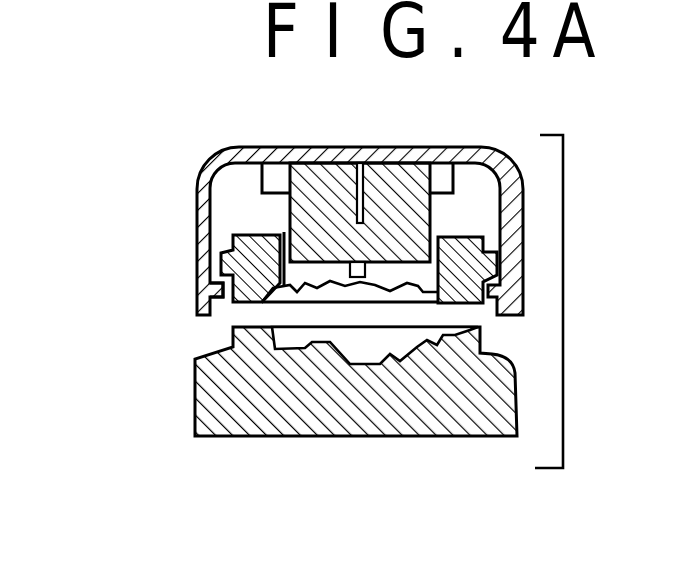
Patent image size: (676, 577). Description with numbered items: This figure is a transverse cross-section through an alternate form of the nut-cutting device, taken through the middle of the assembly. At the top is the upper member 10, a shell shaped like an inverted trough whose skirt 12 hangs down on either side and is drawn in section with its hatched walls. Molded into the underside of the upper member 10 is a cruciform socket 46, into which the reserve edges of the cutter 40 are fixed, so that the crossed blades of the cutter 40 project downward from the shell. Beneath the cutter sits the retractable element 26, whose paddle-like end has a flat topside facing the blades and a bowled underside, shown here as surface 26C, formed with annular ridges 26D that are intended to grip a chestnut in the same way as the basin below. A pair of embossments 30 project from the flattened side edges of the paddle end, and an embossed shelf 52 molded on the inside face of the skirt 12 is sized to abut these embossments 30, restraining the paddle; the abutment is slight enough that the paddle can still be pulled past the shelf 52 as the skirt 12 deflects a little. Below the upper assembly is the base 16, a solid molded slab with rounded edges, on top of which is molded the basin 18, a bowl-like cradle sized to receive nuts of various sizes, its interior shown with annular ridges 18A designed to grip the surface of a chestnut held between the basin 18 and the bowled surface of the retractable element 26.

The upper member 10 is at (215, 180).
The skirt 12 is at (197, 267).
The base 16 is at (300, 441).
The basin 18 is at (231, 342).
The annular ridges 18A is at (355, 362).
The retractable element 26 is at (255, 236).
The bowled under-side 26C is at (423, 293).
The annular ridges 26D is at (300, 284).
The embossments 30 is at (221, 250).
The cutter 40 is at (357, 172).
The cruciform socket 46 is at (260, 170).
The embossed shelf 52 is at (203, 288).